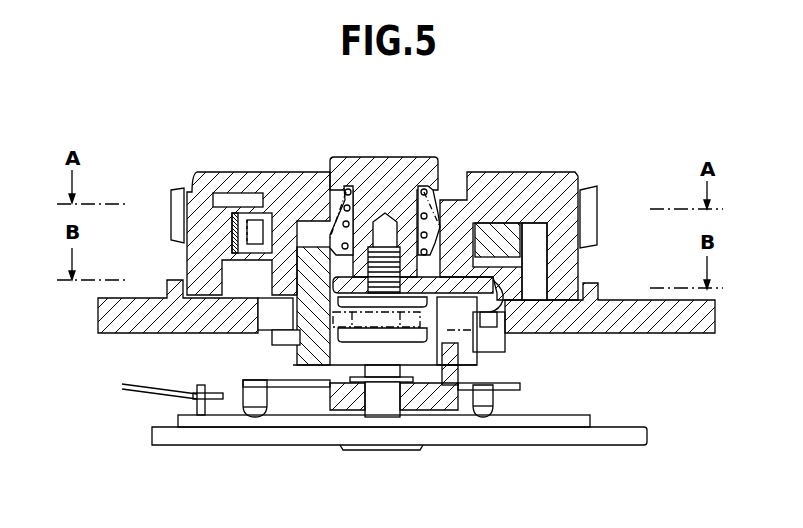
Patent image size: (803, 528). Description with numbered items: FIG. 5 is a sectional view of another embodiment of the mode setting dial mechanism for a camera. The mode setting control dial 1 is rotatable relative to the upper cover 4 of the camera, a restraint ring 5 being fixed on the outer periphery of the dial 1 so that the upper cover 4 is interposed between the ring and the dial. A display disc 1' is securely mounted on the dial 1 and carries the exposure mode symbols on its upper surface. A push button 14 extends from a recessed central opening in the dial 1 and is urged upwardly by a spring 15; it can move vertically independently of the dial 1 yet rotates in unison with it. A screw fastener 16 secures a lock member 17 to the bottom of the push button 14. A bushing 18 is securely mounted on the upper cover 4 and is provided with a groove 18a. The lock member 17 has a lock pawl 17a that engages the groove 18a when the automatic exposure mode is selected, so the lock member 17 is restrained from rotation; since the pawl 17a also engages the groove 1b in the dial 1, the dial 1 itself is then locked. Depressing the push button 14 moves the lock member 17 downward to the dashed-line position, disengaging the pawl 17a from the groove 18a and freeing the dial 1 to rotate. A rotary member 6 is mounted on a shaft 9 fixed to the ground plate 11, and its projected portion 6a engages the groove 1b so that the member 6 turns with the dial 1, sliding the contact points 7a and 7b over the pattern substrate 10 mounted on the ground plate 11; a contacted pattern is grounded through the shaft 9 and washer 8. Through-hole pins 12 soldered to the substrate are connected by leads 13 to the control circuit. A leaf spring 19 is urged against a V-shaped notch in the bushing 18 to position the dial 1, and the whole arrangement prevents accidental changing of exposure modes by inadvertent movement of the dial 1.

The dial 1 is at (518, 220).
The display disc 1' is at (250, 207).
The groove 1b is at (455, 305).
The upper cover 4 is at (645, 322).
The restraint ring 5 is at (273, 338).
The rotary member 6 is at (442, 395).
The projected portion 6a is at (458, 372).
The sliding contact point 7a is at (246, 397).
The sliding contact point 7b is at (485, 398).
The washer 8 is at (404, 380).
The shaft 9 is at (380, 450).
The pattern substrate 10 is at (278, 423).
The ground plate 11 is at (318, 432).
The through-hole pin 12 is at (201, 415).
The leads 13 is at (140, 391).
The push button 14 is at (378, 168).
The spring 15 is at (423, 180).
The screw fastener 16 is at (348, 186).
The lock member 17 is at (445, 278).
The lock pawl 17a is at (505, 302).
The bushing 18 is at (512, 237).
The groove 18a is at (490, 237).
The leaf spring 19 is at (232, 238).